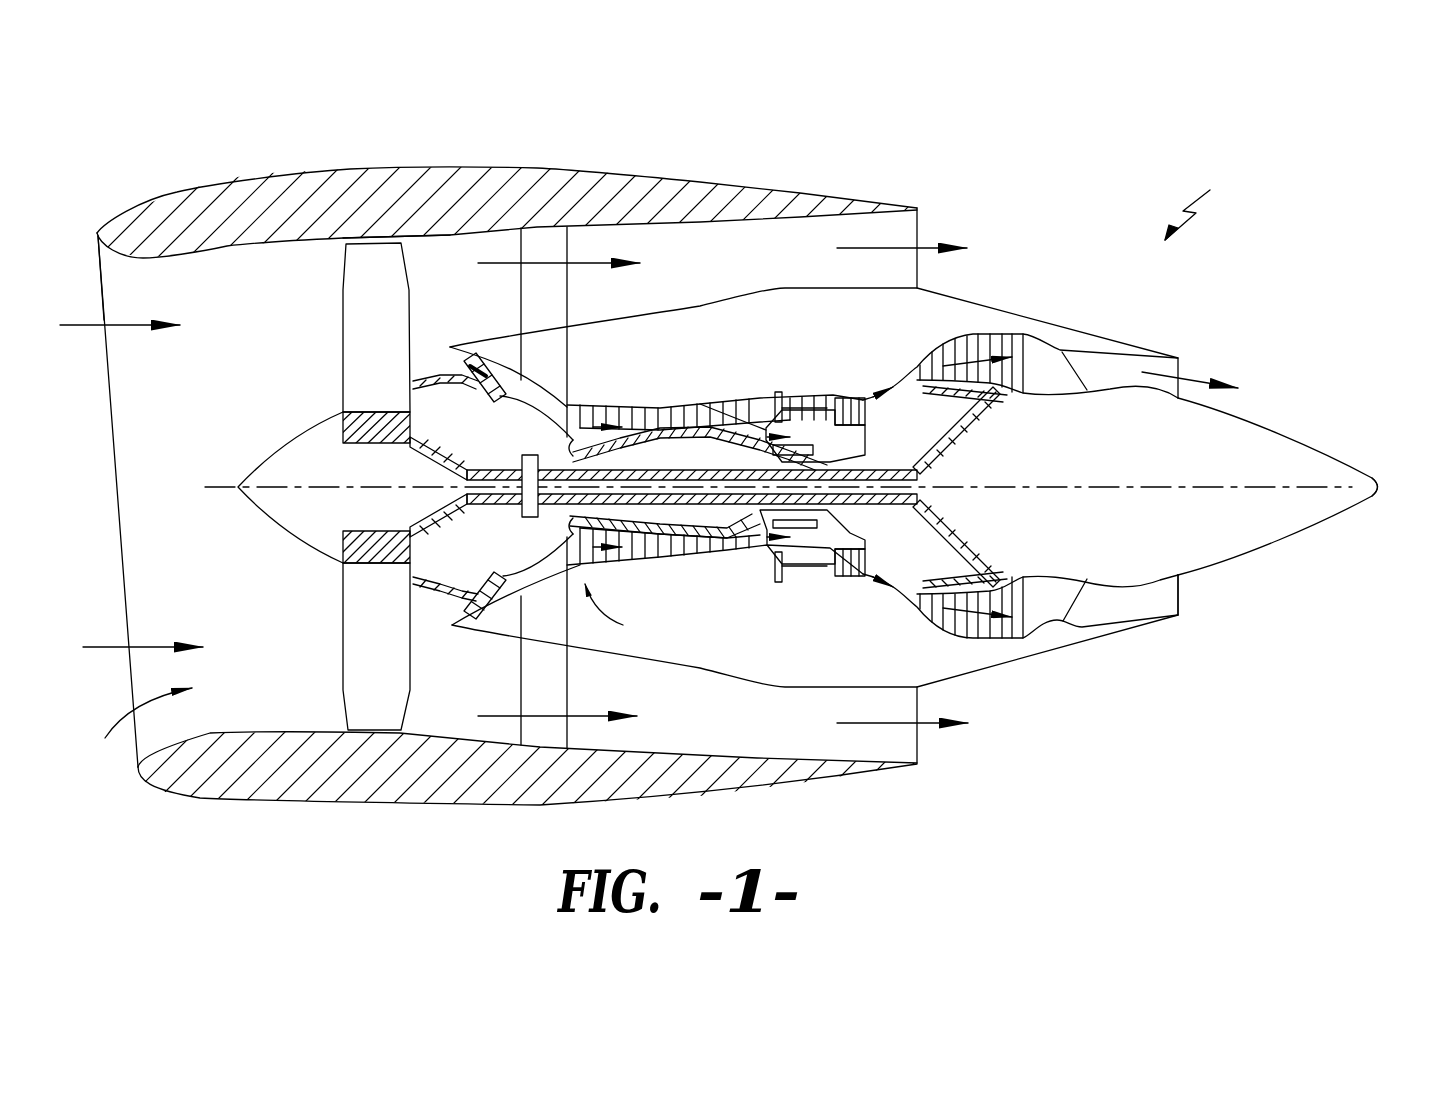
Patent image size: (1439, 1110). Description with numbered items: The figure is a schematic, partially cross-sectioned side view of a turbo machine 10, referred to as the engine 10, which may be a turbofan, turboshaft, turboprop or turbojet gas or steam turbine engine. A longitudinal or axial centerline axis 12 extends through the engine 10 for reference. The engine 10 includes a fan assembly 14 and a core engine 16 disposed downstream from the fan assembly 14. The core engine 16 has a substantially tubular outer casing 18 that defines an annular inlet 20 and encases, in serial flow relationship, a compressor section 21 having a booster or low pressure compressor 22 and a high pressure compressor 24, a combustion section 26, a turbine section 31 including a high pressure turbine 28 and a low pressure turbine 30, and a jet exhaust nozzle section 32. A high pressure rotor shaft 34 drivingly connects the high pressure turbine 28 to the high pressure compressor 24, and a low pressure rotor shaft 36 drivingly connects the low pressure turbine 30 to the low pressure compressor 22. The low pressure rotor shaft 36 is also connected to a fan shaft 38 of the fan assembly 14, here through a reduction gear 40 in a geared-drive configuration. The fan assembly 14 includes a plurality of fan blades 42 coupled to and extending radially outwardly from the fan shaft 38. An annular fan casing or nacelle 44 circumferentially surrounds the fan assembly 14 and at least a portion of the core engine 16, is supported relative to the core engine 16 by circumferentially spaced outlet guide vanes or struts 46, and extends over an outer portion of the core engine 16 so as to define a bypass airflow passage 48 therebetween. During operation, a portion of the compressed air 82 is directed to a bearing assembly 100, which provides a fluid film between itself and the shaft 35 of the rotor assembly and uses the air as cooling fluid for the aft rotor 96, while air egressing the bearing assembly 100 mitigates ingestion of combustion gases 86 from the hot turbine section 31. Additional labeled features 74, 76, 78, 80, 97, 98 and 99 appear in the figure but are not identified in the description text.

The turbo machine (engine) 10 is at (1206, 201).
The longitudinal or axial centerline axis 12 is at (1093, 485).
The fan assembly 14 is at (447, 267).
The core engine 16 is at (787, 288).
The outer casing 18 is at (758, 677).
The annular inlet 20 is at (457, 610).
The compressor section 21 is at (622, 613).
The booster or low pressure (LP) compressor 22 is at (530, 578).
The high pressure (HP) compressor 24 is at (598, 558).
The combustion section 26 is at (800, 562).
The high pressure (HP) turbine 28 is at (862, 570).
The low pressure (LP) turbine 30 is at (1007, 647).
The turbine section 31 is at (888, 363).
The jet exhaust nozzle section 32 is at (1097, 615).
The high pressure (HP) rotor shaft 34 is at (877, 440).
The shaft of the rotor assembly 35 is at (713, 433).
The low pressure (LP) rotor shaft 36 is at (960, 440).
The fan shaft 38 is at (417, 447).
The reduction gear 40 is at (520, 453).
The fan blades 42 is at (360, 320).
The annular fan casing or nacelle 44 is at (357, 168).
The outlet guide vanes or struts 46 is at (550, 243).
The bypass airflow passage 48 is at (684, 273).
The volume of air entering inlet 74 is at (130, 320).
The first portion of air (bypass) 76 is at (135, 731).
The second portion of air through bypass passage 78 is at (927, 247).
The core air inlet portion 80 is at (433, 357).
The compressed air 82 is at (585, 435).
The combustion gases 86 is at (871, 400).
The aft rotor 96 is at (852, 458).
The fuel nozzle 97 is at (703, 433).
The exhaust end 98 is at (1395, 495).
The inlet end 99 is at (58, 495).
The bearing assembly 100 is at (807, 567).